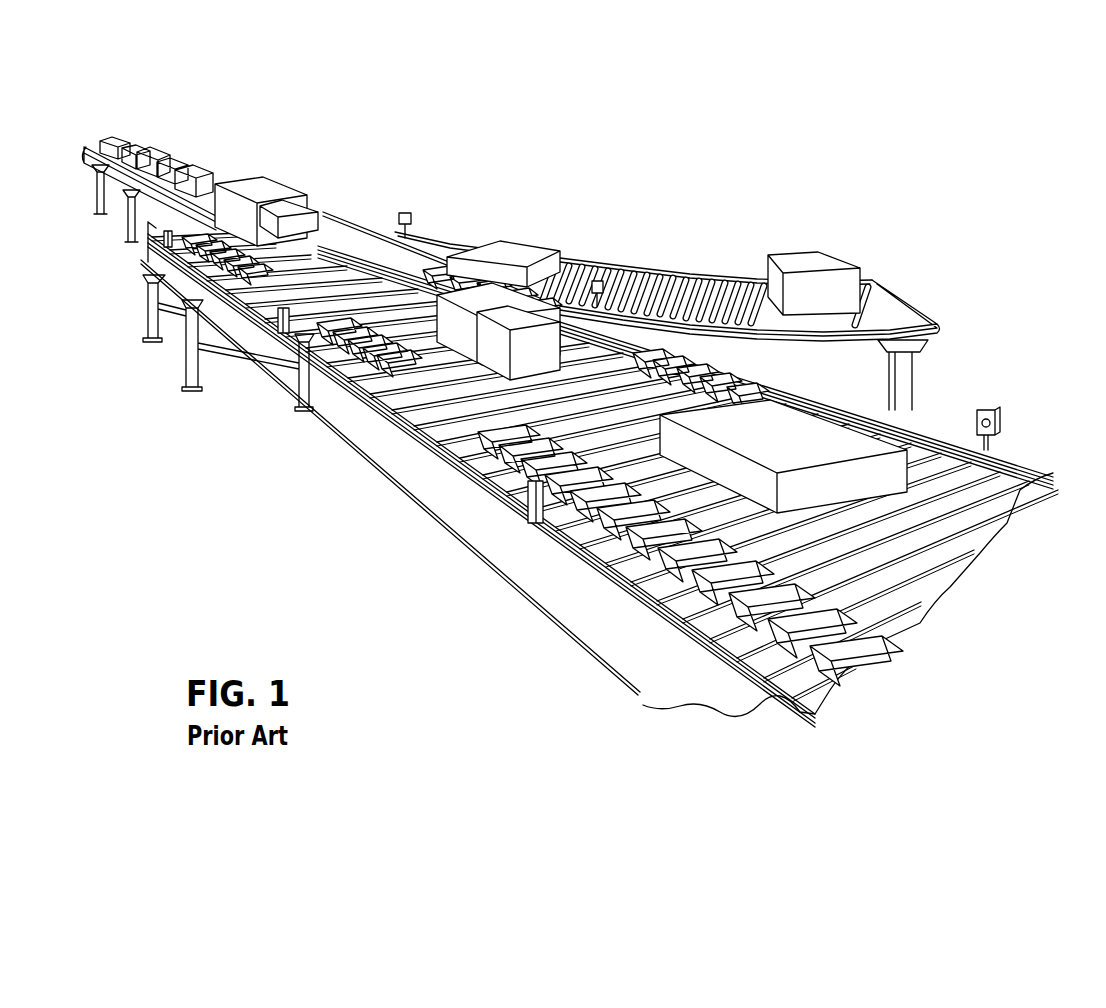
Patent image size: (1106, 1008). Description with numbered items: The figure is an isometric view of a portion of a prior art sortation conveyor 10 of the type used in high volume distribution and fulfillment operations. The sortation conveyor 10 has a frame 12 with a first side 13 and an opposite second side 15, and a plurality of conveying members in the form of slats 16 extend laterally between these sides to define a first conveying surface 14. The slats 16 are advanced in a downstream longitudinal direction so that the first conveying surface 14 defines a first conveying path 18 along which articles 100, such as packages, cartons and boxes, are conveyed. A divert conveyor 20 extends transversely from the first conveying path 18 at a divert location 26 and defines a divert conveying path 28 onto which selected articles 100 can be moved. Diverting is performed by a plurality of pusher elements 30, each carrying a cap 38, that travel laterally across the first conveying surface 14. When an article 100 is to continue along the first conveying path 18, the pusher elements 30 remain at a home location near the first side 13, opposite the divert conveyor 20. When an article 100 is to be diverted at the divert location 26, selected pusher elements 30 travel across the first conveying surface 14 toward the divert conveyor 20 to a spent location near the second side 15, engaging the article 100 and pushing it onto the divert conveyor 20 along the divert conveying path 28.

The sortation conveyor 10 is at (609, 142).
The frame 12 is at (408, 502).
The first side 13 is at (330, 350).
The first conveying surface 14 is at (912, 639).
The second side 15 is at (778, 385).
The slats 16 is at (490, 428).
The first conveying path 18 is at (1027, 664).
The divert conveyor 20 is at (683, 268).
The divert location 26 is at (330, 203).
The divert conveying path 28 is at (975, 288).
The pusher elements 30 is at (673, 577).
The cap 38 is at (727, 572).
The articles 100 is at (154, 129).